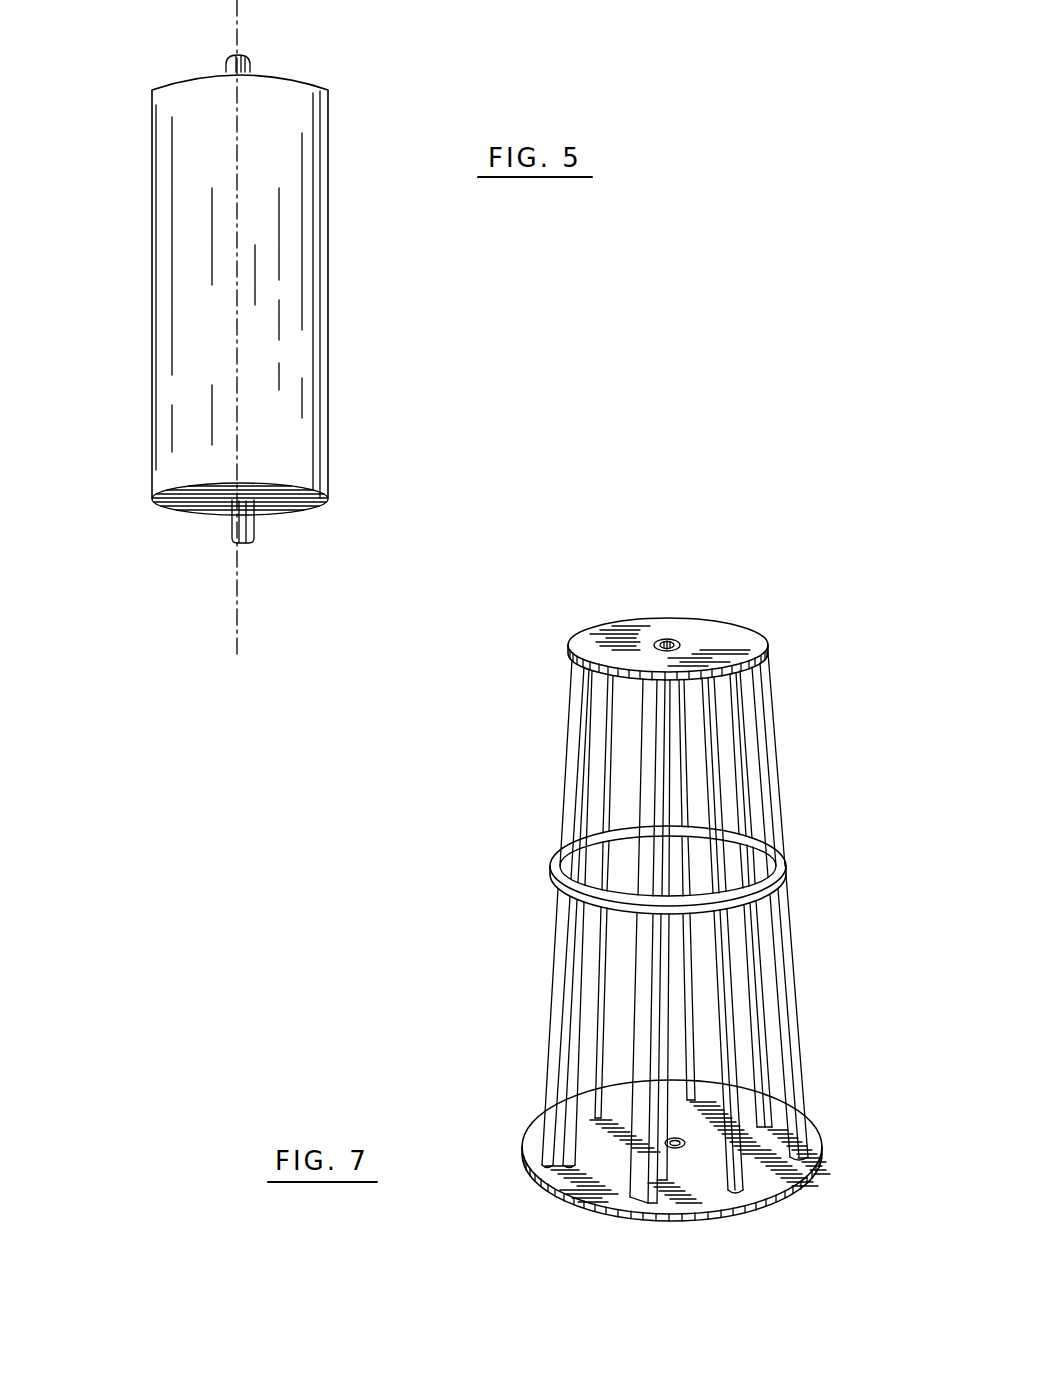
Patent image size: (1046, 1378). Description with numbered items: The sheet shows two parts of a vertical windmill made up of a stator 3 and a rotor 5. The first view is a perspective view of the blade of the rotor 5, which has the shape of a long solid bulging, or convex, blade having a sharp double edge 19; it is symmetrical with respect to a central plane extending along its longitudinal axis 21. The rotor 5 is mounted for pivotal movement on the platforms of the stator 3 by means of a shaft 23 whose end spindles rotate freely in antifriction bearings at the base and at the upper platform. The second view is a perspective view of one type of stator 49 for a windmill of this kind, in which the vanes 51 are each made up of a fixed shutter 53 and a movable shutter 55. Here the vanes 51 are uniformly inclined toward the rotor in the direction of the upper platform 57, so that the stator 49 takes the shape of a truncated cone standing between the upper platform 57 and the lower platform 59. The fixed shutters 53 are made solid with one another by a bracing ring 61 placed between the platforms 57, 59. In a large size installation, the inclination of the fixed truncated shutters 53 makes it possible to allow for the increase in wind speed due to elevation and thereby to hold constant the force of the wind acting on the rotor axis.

In FIG. 7, the stator 3 is at (812, 1182).
In FIG. 5, the rotor 5 is at (316, 307).
In FIG. 5, the sharp double edge 19 is at (333, 417).
In FIG. 5, the longitudinal axis 21 is at (240, 621).
In FIG. 5, the shaft 23 is at (250, 67).
In FIG. 7, the stator 49 is at (715, 608).
In FIG. 7, the vanes 51 is at (693, 992).
In FIG. 7, the fixed shutter 53 is at (640, 1142).
In FIG. 7, the movable shutter 55 is at (568, 1080).
In FIG. 7, the upper platform 57 is at (745, 645).
In FIG. 7, the platform 59 is at (705, 1192).
In FIG. 7, the bracing ring 61 is at (757, 903).